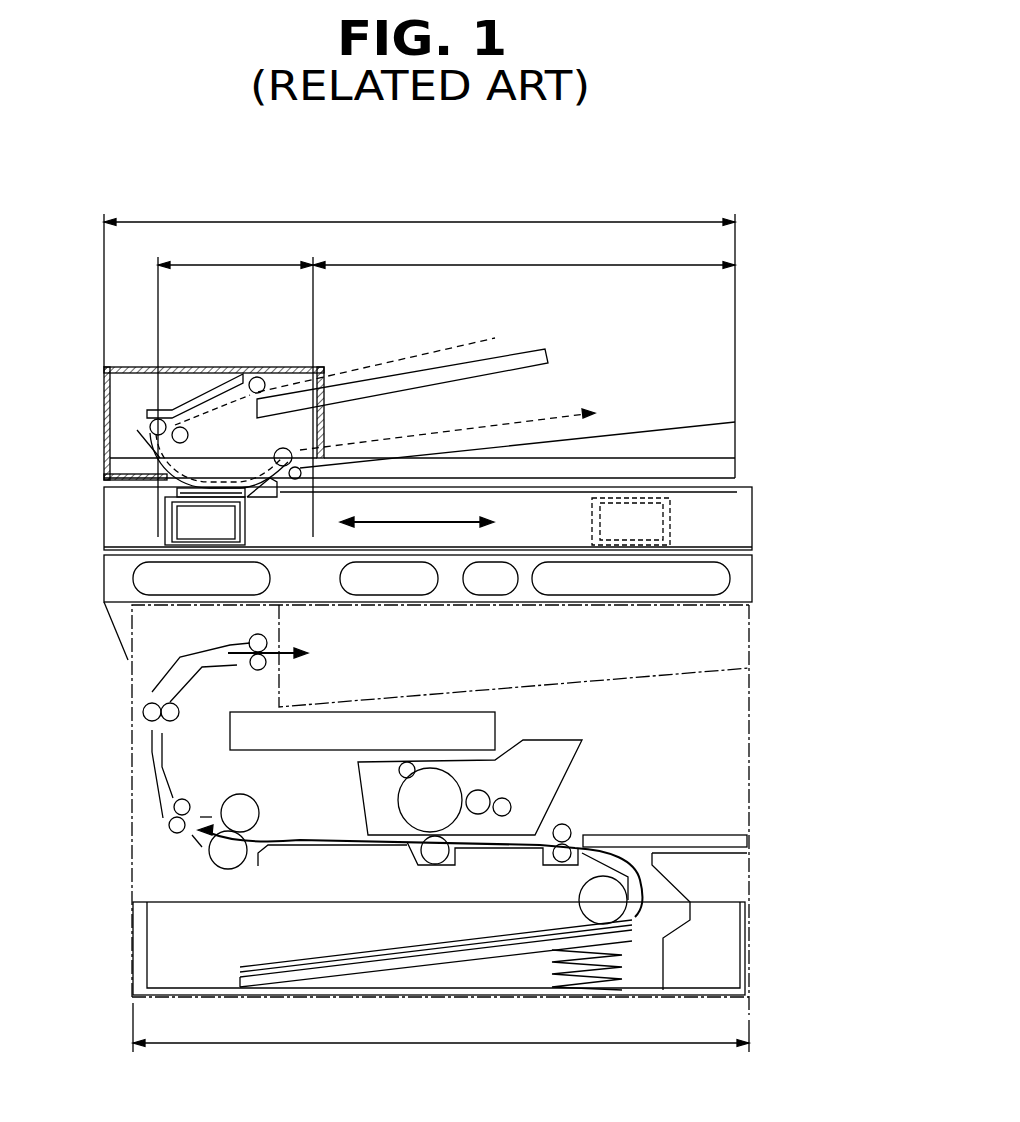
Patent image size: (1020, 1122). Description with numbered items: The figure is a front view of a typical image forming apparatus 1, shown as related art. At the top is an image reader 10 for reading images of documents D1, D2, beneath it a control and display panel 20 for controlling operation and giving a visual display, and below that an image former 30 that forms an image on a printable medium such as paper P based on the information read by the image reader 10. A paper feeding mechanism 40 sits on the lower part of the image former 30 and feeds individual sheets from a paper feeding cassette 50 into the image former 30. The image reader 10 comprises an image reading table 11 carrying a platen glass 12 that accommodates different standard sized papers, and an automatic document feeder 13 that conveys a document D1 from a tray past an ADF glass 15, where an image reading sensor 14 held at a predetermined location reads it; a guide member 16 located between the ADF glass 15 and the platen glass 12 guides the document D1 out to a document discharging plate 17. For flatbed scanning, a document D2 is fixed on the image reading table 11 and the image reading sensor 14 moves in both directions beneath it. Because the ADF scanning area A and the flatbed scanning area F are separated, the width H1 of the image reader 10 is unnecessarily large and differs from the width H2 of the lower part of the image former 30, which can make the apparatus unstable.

The image forming apparatus 1 is at (697, 173).
The image reader 10 is at (770, 437).
The image reading table 11 is at (752, 513).
The platen glass 12 is at (637, 490).
The automatic document feeder (ADF) 13 is at (243, 366).
The image reading sensor 14 is at (165, 520).
The ADF glass 15 is at (158, 484).
The guide member 16 is at (268, 497).
The document discharging plate 17 is at (700, 438).
The control and display panel 20 is at (765, 578).
The image former 30 is at (772, 685).
The paper feeding mechanism 40 is at (772, 879).
The paper feeding cassette 50 is at (772, 944).
The paper P is at (277, 962).
The document D1 is at (408, 364).
The document D2 is at (503, 487).
The width of the image reader H1 is at (419, 310).
The width of a lower part of the image former H2 is at (441, 1027).
The ADF scanning area A is at (235, 387).
The flatbed scanning area F is at (524, 253).